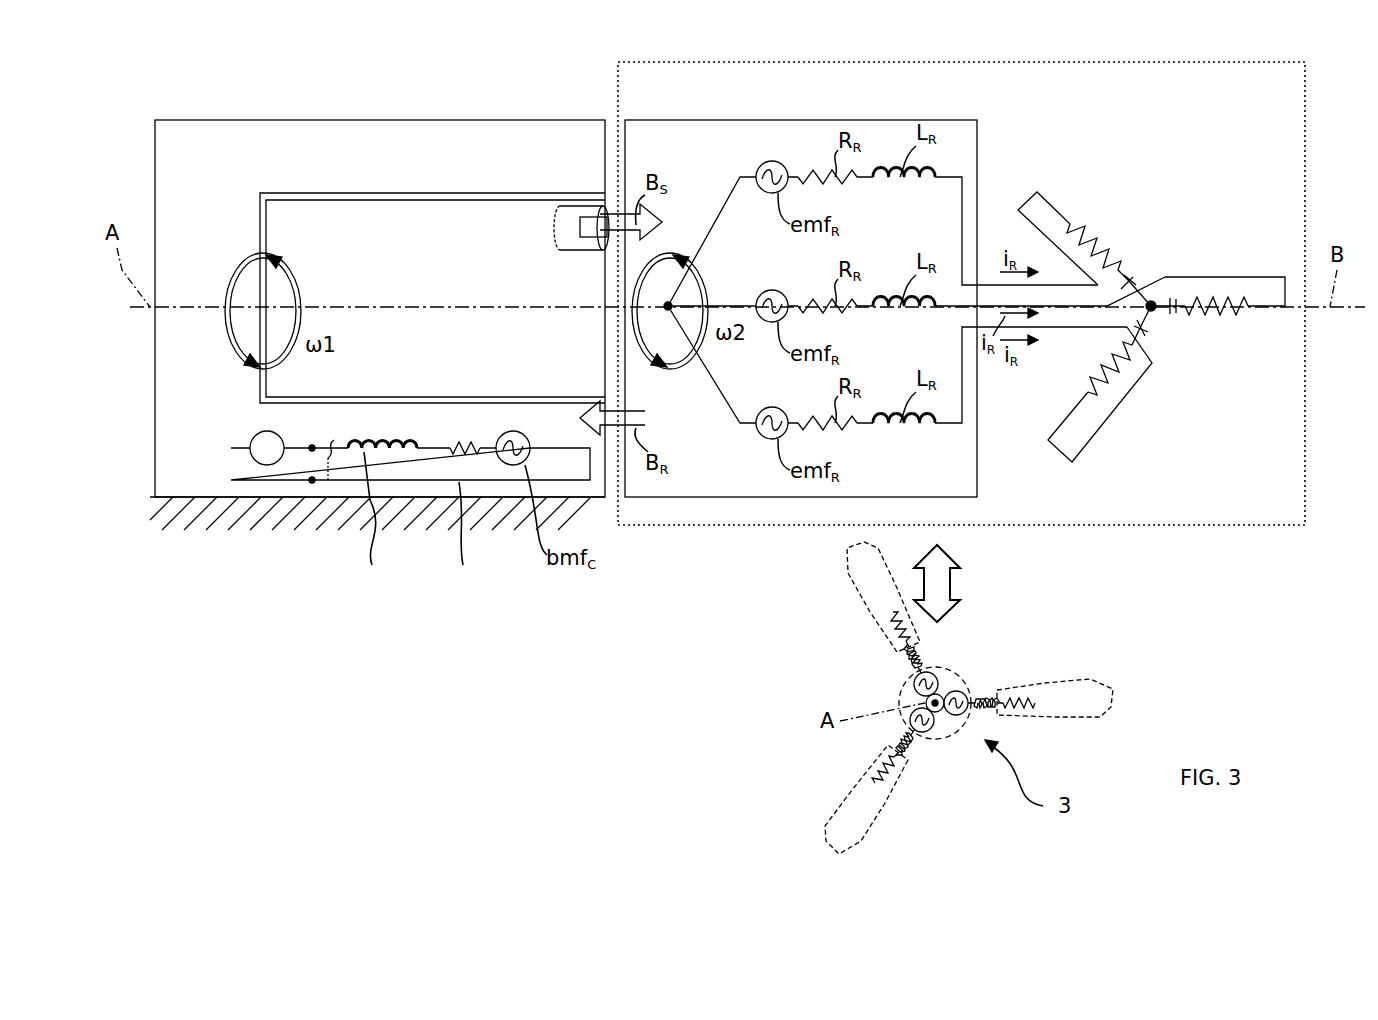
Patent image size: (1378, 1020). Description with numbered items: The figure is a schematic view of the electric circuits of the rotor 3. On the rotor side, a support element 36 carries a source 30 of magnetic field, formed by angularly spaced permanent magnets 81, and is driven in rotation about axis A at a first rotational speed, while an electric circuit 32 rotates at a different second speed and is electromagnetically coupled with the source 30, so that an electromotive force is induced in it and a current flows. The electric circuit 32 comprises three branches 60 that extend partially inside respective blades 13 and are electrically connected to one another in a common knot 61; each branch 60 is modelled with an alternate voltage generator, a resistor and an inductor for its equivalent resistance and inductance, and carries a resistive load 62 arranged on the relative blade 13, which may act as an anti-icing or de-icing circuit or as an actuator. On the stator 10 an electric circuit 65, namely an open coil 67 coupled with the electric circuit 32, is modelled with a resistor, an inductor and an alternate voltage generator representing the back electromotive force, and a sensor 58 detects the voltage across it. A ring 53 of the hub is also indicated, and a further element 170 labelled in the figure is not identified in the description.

The rotor 3 is at (572, 93).
The stator 10 is at (217, 515).
The blades 13 is at (862, 605).
The source of magnetic field 30 is at (569, 186).
The electric circuit 32 is at (961, 137).
The support element 36 is at (470, 200).
The ring 53 is at (748, 106).
The sensor 58 is at (262, 440).
The branches 60 is at (1099, 195).
The common knot 61 is at (1156, 312).
The resistive load 62 is at (1107, 248).
The electric circuit 65 is at (277, 522).
The open coil 67 is at (488, 482).
The permanent magnets 81 is at (585, 248).
The control circuit wiring 170 is at (418, 483).